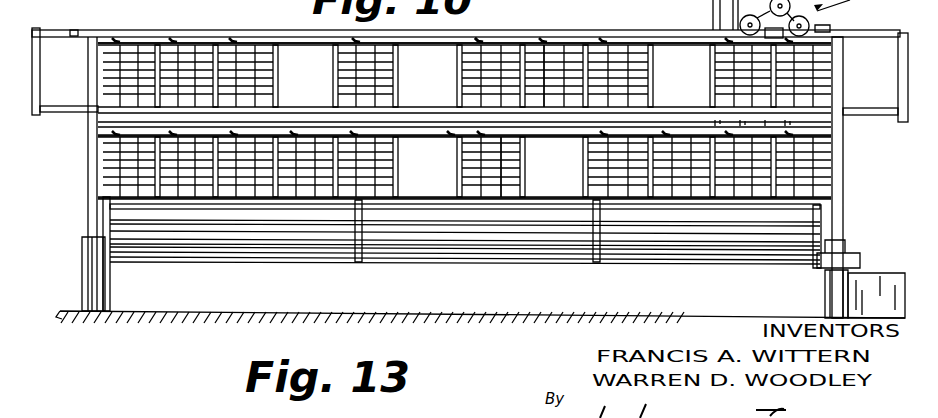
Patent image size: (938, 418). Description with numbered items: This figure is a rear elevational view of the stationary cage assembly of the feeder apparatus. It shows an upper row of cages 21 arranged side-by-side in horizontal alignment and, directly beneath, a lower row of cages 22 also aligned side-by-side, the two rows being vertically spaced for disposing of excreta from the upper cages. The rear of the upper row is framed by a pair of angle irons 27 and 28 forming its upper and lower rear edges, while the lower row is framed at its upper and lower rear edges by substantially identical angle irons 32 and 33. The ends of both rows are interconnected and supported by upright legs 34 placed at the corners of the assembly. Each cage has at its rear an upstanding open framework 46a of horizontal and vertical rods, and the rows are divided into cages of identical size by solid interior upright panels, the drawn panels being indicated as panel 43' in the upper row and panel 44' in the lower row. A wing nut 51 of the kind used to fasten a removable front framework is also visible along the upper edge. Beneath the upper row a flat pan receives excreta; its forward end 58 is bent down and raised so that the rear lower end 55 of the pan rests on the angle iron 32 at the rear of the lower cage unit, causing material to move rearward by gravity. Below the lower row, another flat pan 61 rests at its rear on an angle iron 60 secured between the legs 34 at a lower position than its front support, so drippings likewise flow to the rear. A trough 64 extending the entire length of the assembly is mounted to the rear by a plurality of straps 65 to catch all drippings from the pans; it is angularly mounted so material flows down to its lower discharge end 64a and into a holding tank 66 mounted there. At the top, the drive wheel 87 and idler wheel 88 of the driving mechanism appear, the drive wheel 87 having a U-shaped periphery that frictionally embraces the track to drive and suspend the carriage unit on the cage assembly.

The forward end 58 is at (74, 28).
The upper row of cages 21 is at (240, 40).
The upper panel post 43' is at (288, 76).
The angle iron 27 is at (445, 43).
The angle iron 28 is at (445, 107).
The wing nut 51 is at (479, 39).
The open framework 46a is at (553, 55).
The idler wheel 88 is at (743, 28).
The drive wheel 87 is at (805, 26).
The rear lower end 55 is at (410, 133).
The lower row of cages 22 is at (93, 170).
The upright legs 34 is at (88, 203).
The angle iron 32 is at (448, 138).
The angle iron 33 is at (442, 200).
The panel post 44' is at (565, 121).
The flat pan 61 is at (476, 221).
The lower discharge end 64a is at (855, 262).
The holding tank 66 is at (885, 270).
The straps 65 is at (345, 265).
The trough 64 is at (470, 262).
The angle iron 60 is at (538, 262).